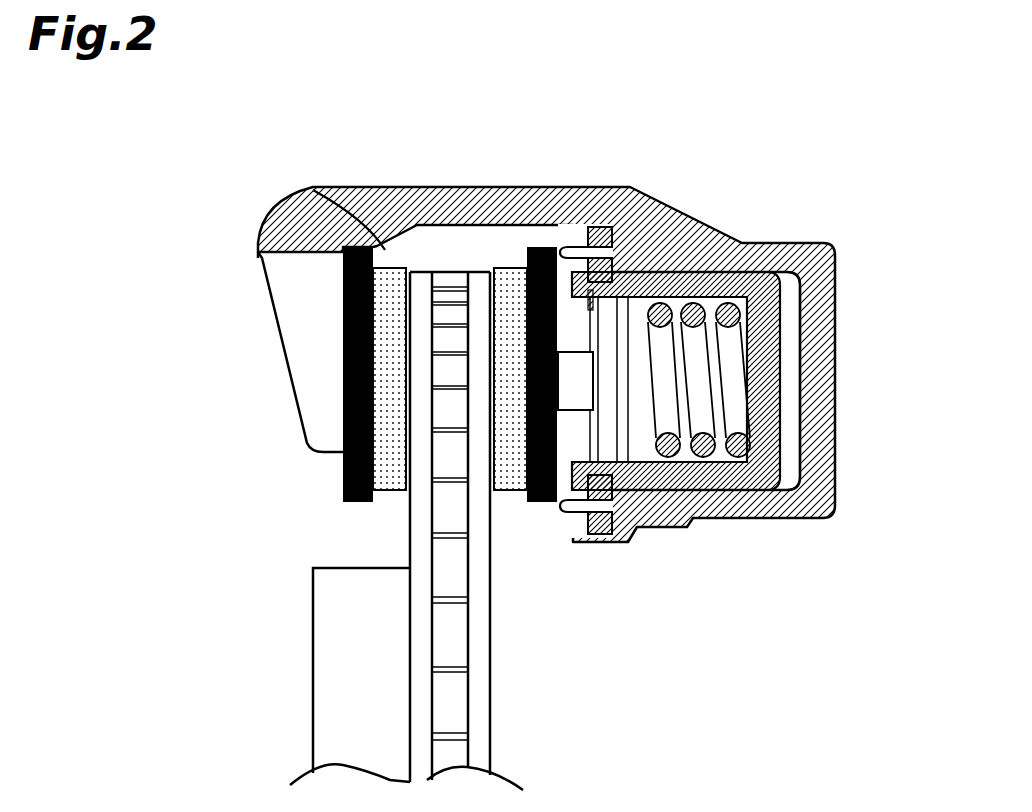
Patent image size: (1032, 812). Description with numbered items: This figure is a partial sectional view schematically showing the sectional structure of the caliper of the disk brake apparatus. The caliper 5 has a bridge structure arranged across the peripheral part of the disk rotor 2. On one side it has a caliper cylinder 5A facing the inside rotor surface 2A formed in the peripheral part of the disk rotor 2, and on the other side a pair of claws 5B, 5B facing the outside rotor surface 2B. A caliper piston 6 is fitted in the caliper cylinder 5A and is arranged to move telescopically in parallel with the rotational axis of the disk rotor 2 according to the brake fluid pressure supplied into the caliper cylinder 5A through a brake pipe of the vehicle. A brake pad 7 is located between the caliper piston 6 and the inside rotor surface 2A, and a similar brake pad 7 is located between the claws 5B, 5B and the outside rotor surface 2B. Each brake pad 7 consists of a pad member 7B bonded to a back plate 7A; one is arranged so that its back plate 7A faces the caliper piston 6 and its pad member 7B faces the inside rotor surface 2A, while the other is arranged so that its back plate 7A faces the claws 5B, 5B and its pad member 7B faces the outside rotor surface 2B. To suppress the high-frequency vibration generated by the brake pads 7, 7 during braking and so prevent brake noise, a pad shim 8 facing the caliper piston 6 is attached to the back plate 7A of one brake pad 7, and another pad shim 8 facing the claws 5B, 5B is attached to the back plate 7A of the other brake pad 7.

The disk rotor 2 is at (414, 531).
The inside rotor surface 2A is at (490, 507).
The outside rotor surface 2B is at (408, 508).
The caliper 5 is at (660, 200).
The caliper cylinder 5A is at (838, 328).
The claws 5B is at (289, 371).
The caliper piston 6 is at (787, 393).
The brake pad 7 is at (453, 293).
The back plate 7A is at (313, 190).
The pad member 7B is at (405, 268).
The pad shim 8 is at (345, 475).